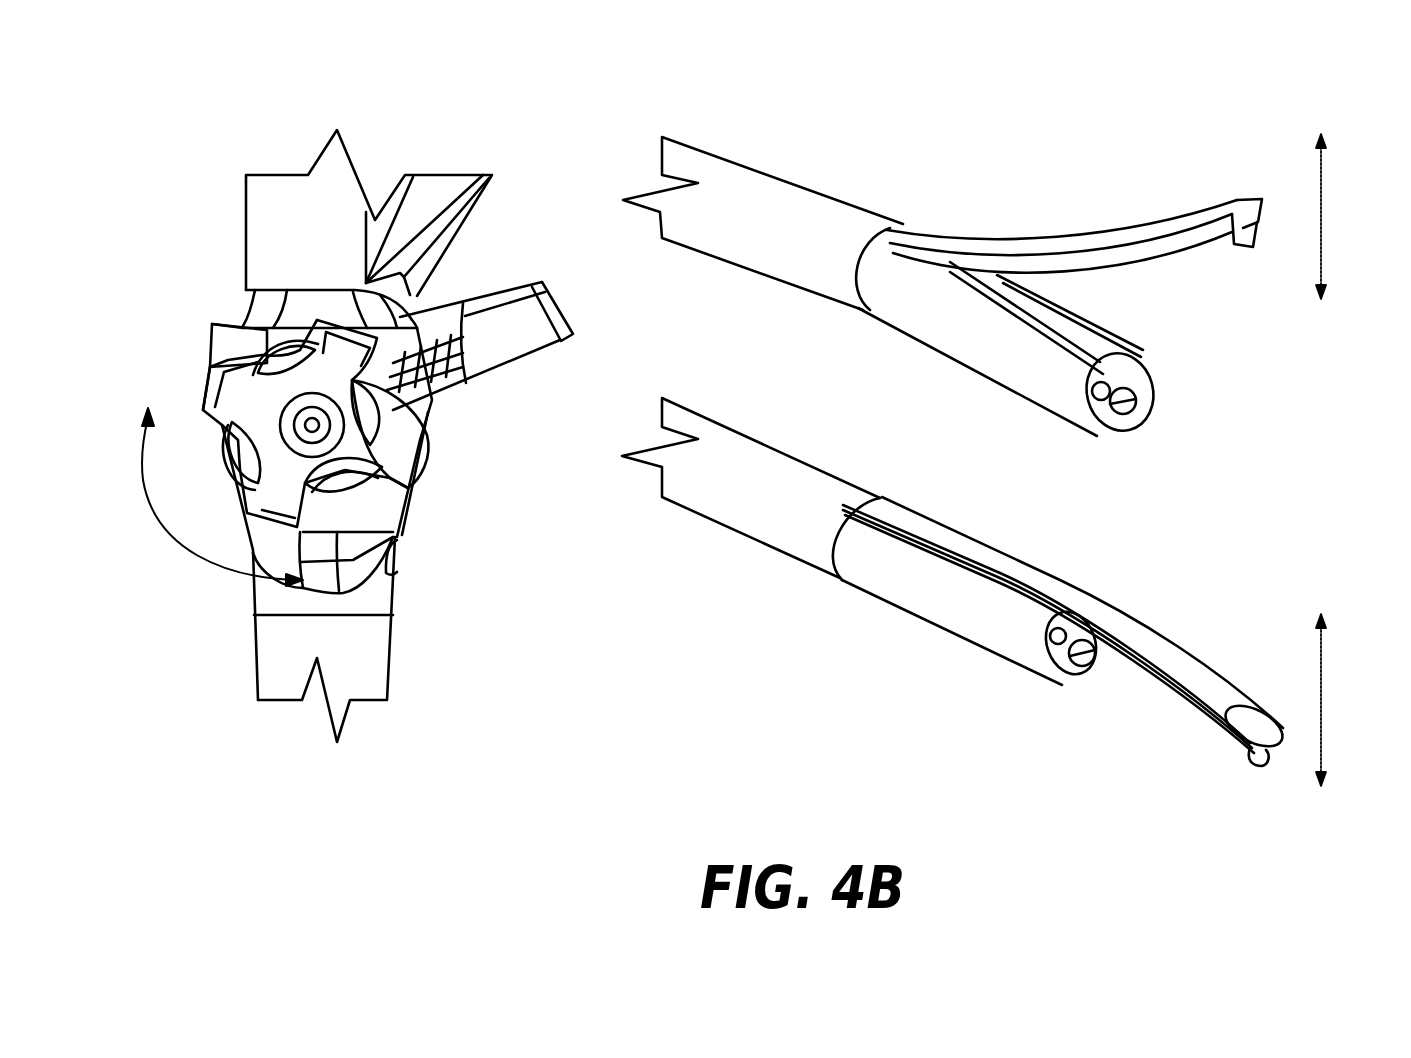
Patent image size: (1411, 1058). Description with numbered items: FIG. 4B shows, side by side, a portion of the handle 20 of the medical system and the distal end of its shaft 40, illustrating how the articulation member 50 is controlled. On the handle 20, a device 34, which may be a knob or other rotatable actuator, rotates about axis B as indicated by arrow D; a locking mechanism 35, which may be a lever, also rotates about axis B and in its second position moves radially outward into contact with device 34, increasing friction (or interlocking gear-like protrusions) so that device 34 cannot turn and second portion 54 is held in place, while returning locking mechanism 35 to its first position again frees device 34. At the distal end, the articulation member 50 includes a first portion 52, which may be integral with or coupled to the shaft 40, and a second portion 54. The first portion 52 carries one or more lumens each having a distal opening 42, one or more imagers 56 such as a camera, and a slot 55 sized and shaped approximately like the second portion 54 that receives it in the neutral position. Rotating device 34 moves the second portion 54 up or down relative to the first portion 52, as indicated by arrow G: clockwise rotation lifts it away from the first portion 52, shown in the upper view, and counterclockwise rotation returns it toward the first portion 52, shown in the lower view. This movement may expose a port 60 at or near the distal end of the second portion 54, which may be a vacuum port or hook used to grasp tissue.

The handle 20 is at (361, 389).
The device 34 is at (395, 472).
The locking mechanism 35 is at (537, 333).
The shaft 40 is at (797, 200).
The distal opening 42 is at (1123, 410).
The articulation member 50 is at (1099, 440).
The first portion 52 is at (963, 603).
The second portion 54 is at (1022, 248).
The slot 55 is at (1058, 318).
The imager 56 is at (1100, 397).
The port 60 is at (1236, 246).